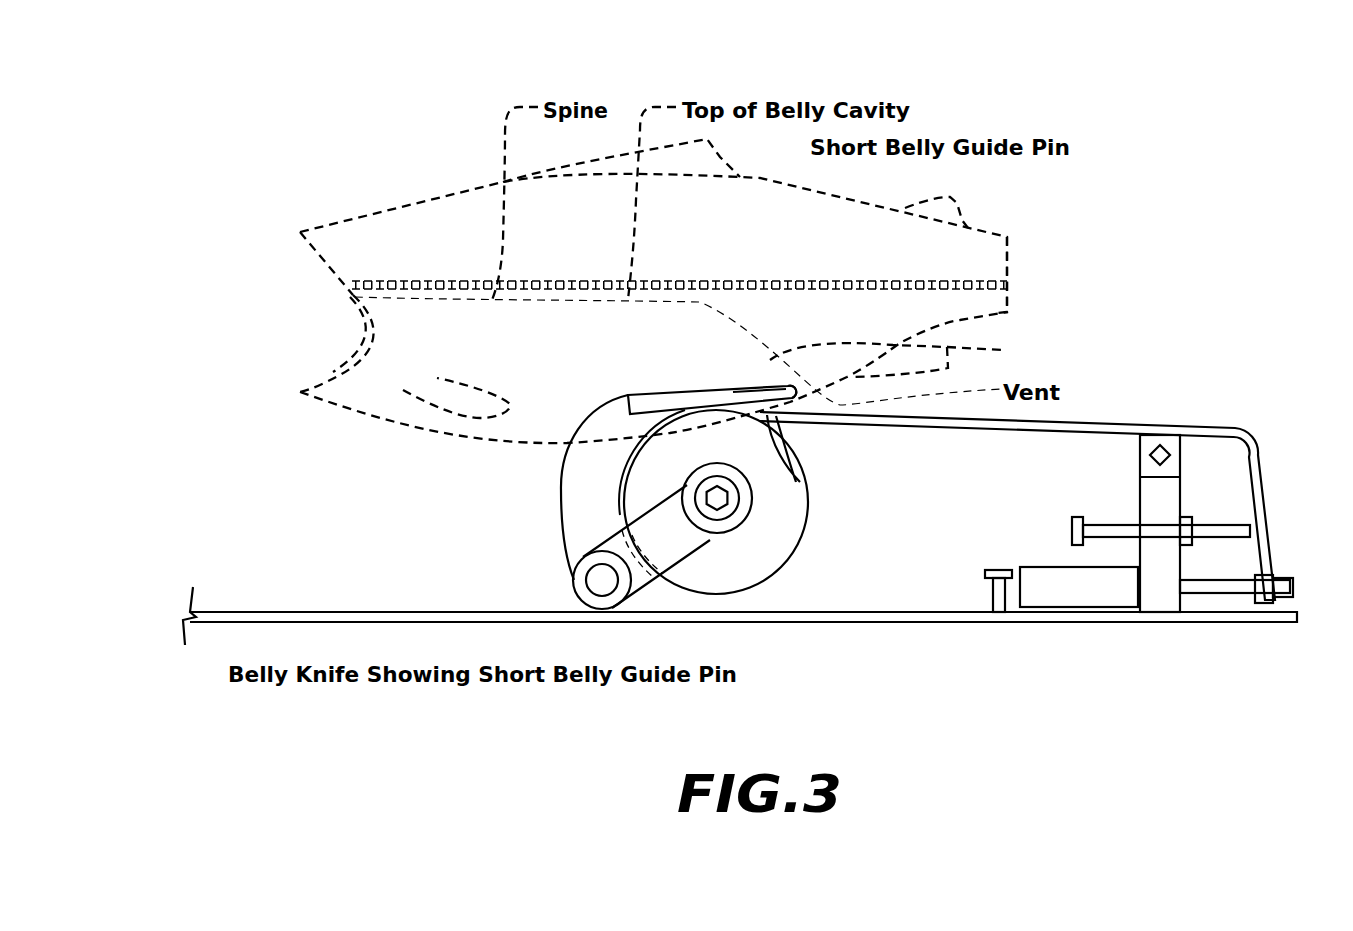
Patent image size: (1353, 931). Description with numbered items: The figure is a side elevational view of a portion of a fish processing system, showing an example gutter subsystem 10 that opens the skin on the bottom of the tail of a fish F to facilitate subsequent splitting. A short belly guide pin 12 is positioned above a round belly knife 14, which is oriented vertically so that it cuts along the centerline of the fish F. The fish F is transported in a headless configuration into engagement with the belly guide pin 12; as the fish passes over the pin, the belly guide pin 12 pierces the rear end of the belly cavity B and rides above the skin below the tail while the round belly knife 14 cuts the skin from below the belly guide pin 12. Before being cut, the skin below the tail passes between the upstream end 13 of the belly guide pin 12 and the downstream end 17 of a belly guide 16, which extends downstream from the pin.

The subsystem 10 is at (1224, 116).
The belly guide pin 12 is at (663, 402).
The upstream end 13 is at (803, 147).
The round belly knife 14 is at (767, 562).
The belly guide 16 is at (1085, 428).
The downstream end 17 is at (797, 483).
The belly cavity B is at (1015, 350).
The fish F is at (973, 245).